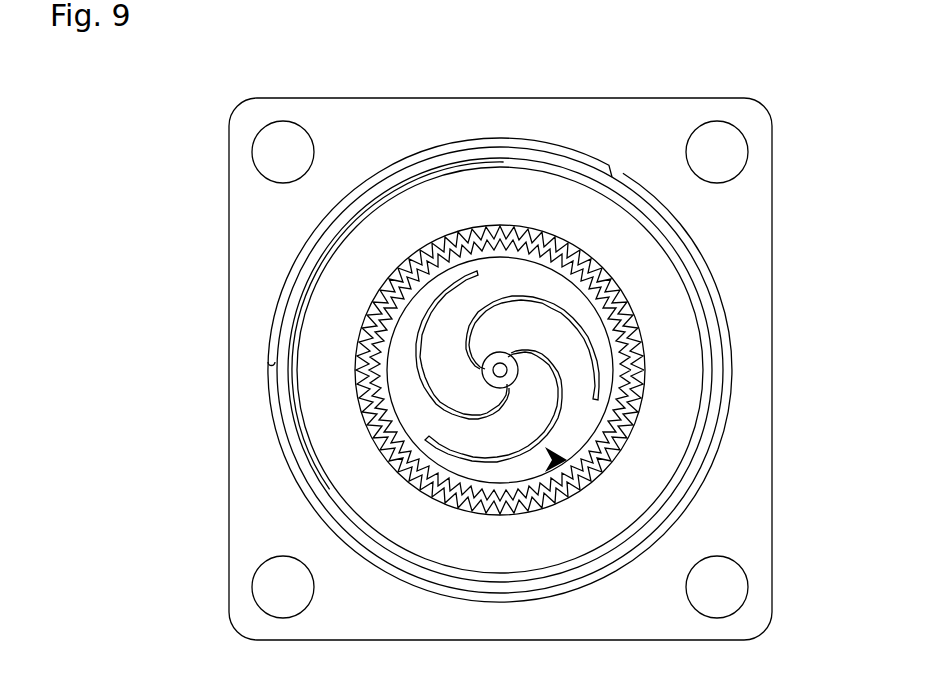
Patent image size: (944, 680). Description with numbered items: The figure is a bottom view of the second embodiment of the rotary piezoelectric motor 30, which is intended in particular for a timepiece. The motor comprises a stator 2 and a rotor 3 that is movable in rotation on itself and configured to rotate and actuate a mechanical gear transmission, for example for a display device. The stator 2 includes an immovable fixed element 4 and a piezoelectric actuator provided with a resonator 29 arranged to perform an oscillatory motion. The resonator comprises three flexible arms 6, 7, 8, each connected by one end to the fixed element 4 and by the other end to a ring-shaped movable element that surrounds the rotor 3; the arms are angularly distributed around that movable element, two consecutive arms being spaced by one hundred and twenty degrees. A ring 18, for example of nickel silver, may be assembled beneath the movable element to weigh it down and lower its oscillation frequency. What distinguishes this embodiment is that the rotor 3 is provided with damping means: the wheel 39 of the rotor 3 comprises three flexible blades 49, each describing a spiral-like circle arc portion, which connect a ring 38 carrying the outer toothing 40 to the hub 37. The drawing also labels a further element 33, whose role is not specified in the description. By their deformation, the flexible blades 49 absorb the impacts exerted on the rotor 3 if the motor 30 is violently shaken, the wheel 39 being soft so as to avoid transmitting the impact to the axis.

The stator 2 is at (449, 78).
The rotor 3 is at (348, 338).
The fixed element 4 is at (522, 89).
The flexible arm 6 is at (383, 545).
The flexible arm 7 is at (715, 370).
The flexible arm 8 is at (427, 170).
The ring 18 is at (673, 333).
The resonator 29 is at (711, 489).
The piezoelectric motor 30 is at (823, 77).
The serration 33 is at (666, 296).
The hub 37 is at (497, 360).
The ring 38 is at (527, 483).
The wheel 39 is at (369, 380).
The outer toothing 40 is at (549, 237).
The flexible blades 49 is at (387, 330).